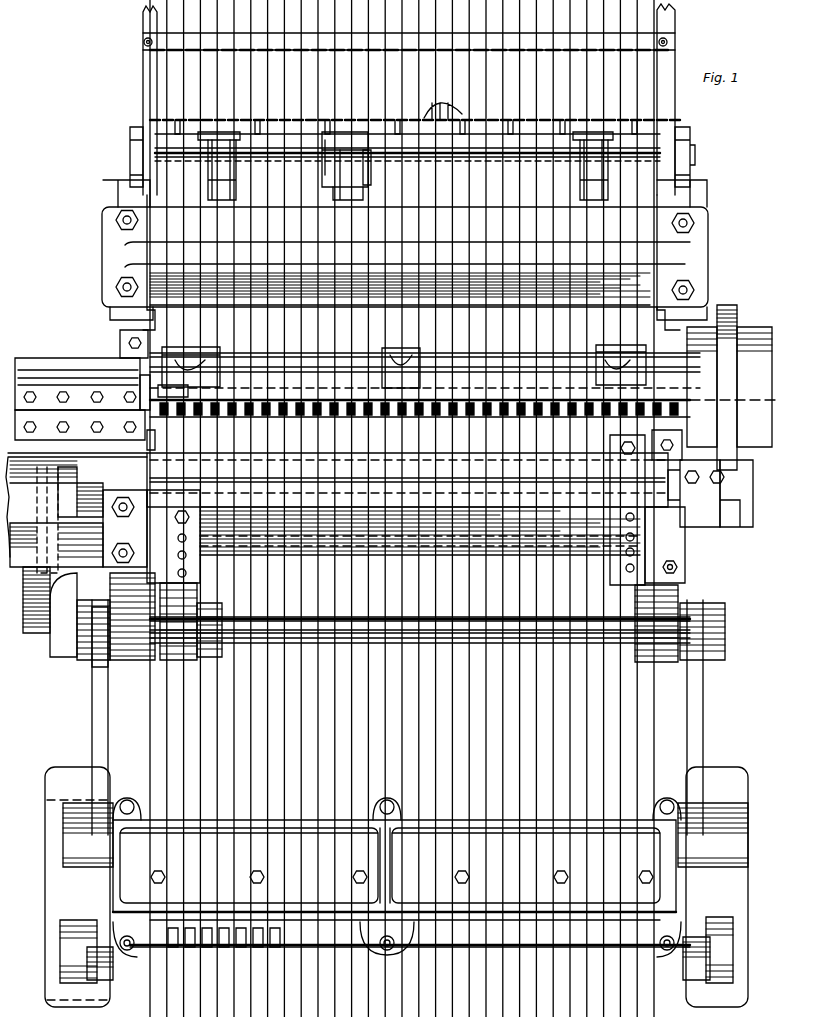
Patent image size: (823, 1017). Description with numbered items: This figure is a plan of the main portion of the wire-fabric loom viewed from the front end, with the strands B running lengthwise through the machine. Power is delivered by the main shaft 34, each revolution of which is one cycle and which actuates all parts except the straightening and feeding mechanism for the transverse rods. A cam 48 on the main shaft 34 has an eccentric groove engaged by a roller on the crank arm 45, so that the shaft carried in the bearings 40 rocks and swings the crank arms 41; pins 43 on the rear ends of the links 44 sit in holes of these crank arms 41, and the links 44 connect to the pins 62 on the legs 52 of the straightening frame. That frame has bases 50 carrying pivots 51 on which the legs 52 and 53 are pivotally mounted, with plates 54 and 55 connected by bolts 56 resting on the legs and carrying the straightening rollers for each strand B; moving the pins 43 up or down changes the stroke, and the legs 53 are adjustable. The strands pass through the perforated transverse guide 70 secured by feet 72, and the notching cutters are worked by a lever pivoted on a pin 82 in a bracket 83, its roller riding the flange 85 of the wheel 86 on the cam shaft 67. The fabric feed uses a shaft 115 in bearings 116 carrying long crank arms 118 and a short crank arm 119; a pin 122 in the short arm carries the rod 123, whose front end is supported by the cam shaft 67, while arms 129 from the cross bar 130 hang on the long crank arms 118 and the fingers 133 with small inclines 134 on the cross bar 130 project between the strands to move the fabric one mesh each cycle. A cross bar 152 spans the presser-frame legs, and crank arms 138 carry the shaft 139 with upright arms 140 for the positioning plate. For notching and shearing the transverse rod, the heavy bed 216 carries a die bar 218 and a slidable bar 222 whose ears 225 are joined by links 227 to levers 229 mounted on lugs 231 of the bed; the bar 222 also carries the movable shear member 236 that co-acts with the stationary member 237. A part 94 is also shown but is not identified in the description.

The strand B is at (420, 716).
The small inclines 134 is at (634, 127).
The cross bar 130 is at (476, 128).
The shaft 115 is at (472, 155).
The fingers 133 is at (418, 114).
The bearings 116 is at (684, 130).
The arms 129 is at (590, 169).
The long crank arms 118 is at (610, 172).
The pin 122 is at (322, 166).
The rod 123 is at (344, 196).
The short crank arm 119 is at (388, 155).
The cross bar 152 is at (405, 263).
The heavy bed 216 is at (40, 358).
The die bar 218 is at (80, 396).
The stationary shear member 237 is at (143, 390).
The crank arms 138 is at (600, 390).
The upright arms 140 is at (640, 350).
The shaft 139 is at (482, 358).
The comb 94 is at (248, 403).
The flange 85 is at (732, 317).
The wheel 86 is at (760, 335).
The cam shaft 67 is at (772, 404).
The slidable bar 222 is at (80, 425).
The ears 225 is at (40, 471).
The movable shear member 236 is at (146, 432).
The links 227 is at (50, 504).
The pins 62 is at (407, 480).
The transverse guide 70 is at (420, 516).
The feet 72 is at (630, 528).
The bracket 83 is at (721, 523).
The pin 82 is at (742, 523).
The levers 229 is at (42, 617).
The lugs 231 is at (65, 643).
The crank arms 41 is at (90, 653).
The pins 43 is at (675, 655).
The bearings 40 is at (652, 654).
The cam 48 is at (178, 660).
The crank arm 45 is at (210, 658).
The main shaft 34 is at (376, 636).
The links 44 is at (700, 736).
The bases 50 is at (396, 887).
The legs 52 is at (723, 866).
The bolts 56 is at (394, 953).
The plate 54 is at (394, 866).
The plate 55 is at (308, 935).
The pivots 51 is at (735, 949).
The legs 53 is at (696, 943).